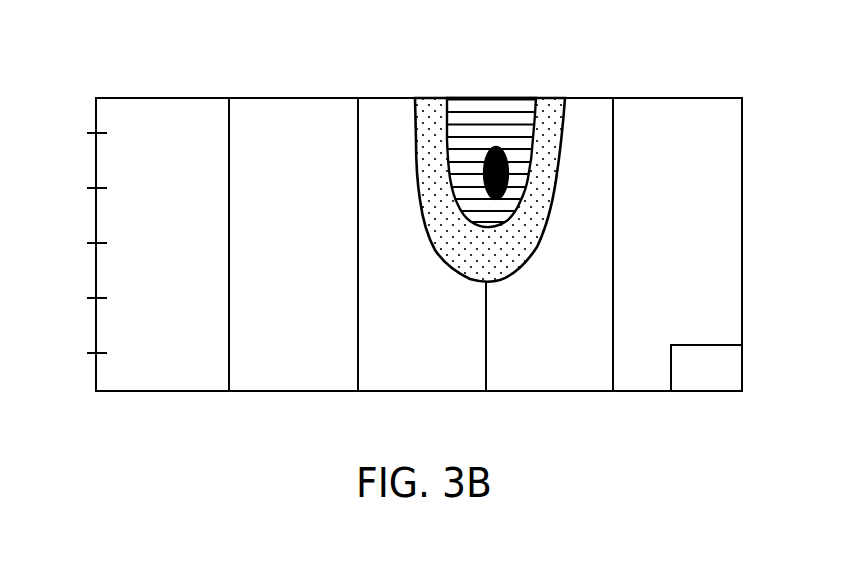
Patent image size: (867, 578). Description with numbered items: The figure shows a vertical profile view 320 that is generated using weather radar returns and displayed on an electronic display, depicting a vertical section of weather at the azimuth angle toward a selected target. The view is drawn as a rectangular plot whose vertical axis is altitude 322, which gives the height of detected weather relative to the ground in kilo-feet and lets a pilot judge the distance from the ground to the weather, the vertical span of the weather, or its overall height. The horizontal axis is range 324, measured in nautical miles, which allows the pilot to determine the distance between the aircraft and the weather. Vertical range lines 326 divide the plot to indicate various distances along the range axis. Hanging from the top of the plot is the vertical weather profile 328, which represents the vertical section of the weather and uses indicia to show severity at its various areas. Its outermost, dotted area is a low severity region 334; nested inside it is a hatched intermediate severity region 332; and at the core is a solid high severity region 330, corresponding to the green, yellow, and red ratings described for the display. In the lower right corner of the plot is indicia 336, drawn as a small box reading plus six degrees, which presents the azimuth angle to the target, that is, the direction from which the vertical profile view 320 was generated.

The vertical profile view 320 is at (219, 63).
The altitude 322 is at (96, 168).
The range 324 is at (158, 391).
The range lines 326 is at (229, 360).
The vertical weather profile 328 is at (491, 165).
The high severity region 330 is at (492, 148).
The intermediate severity region 332 is at (525, 120).
The low severity region 334 is at (555, 112).
The indicia 336 is at (730, 362).